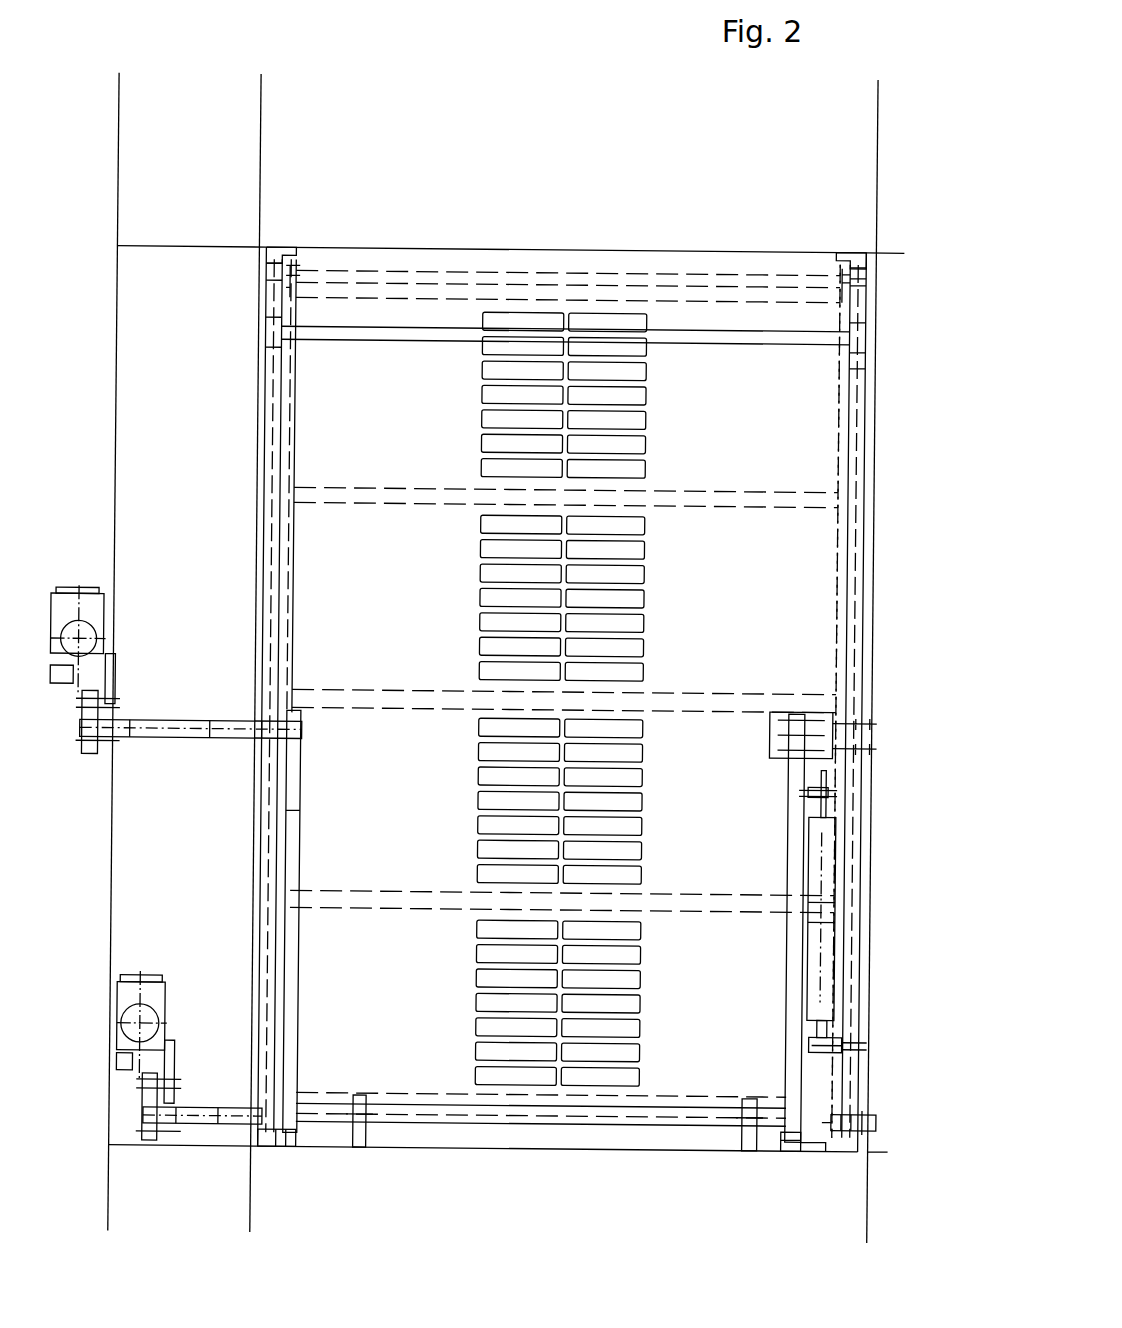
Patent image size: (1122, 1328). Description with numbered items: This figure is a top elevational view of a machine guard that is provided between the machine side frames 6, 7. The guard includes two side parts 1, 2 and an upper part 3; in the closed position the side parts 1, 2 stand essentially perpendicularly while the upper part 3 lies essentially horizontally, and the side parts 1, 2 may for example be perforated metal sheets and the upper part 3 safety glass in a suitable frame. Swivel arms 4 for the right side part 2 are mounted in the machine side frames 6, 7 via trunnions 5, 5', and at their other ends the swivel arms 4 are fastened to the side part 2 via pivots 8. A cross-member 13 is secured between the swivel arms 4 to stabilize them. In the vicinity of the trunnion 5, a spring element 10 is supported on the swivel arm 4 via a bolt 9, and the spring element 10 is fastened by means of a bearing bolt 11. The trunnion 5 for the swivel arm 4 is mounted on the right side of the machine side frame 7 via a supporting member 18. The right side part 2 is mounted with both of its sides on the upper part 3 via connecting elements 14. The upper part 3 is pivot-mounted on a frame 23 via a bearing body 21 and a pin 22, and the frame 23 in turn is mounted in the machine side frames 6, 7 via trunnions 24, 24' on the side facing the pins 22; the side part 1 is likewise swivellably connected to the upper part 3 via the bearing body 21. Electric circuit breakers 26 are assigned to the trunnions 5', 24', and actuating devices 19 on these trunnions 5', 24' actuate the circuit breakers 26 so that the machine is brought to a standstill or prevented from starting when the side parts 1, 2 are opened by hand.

The side part 1 is at (551, 249).
The side part 2 is at (552, 1150).
The upper part 3 is at (805, 445).
The swivel arm 4 is at (298, 855).
The trunnion 5 is at (801, 704).
The trunnion 5' is at (191, 704).
The machine side frame 6 is at (237, 243).
The machine side frame 7 is at (880, 255).
The pivot 8 is at (283, 1150).
The bolt 9 is at (805, 793).
The spring element 10 is at (822, 970).
The bearing bolt 11 is at (825, 1042).
The cross-member 13 is at (700, 346).
The connecting element 14 is at (362, 1150).
The supporting member 18 is at (822, 735).
The actuating device 19 is at (108, 688).
The bearing body 21 is at (268, 304).
The pin 22 is at (287, 262).
The frame 23 is at (266, 861).
The trunnion 24 is at (870, 1155).
The trunnion 24' is at (202, 1149).
The electric circuit breaker 26 is at (83, 633).